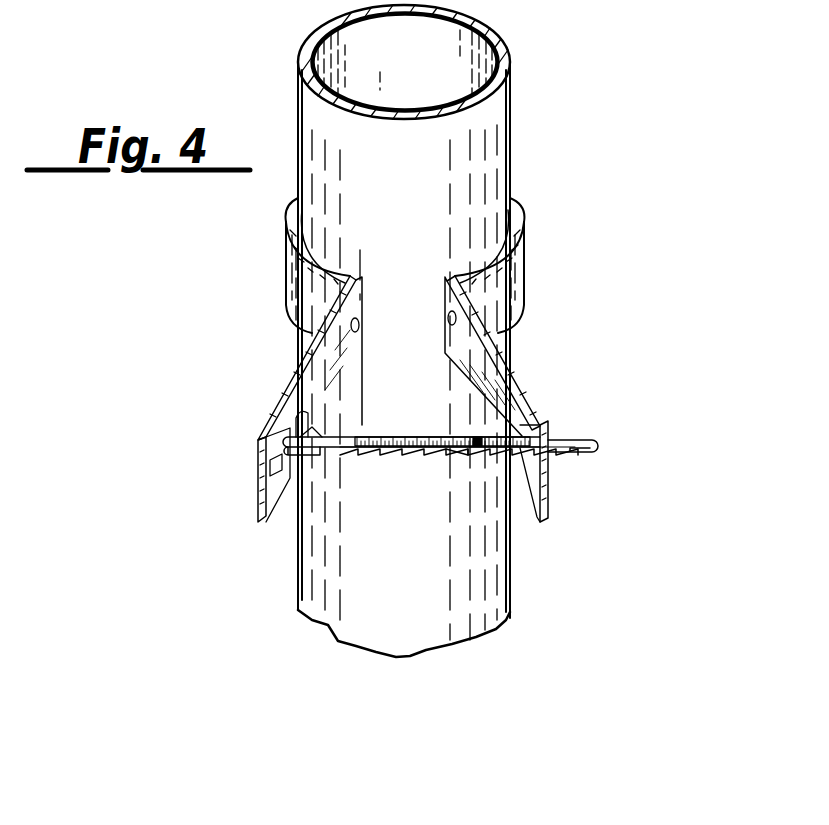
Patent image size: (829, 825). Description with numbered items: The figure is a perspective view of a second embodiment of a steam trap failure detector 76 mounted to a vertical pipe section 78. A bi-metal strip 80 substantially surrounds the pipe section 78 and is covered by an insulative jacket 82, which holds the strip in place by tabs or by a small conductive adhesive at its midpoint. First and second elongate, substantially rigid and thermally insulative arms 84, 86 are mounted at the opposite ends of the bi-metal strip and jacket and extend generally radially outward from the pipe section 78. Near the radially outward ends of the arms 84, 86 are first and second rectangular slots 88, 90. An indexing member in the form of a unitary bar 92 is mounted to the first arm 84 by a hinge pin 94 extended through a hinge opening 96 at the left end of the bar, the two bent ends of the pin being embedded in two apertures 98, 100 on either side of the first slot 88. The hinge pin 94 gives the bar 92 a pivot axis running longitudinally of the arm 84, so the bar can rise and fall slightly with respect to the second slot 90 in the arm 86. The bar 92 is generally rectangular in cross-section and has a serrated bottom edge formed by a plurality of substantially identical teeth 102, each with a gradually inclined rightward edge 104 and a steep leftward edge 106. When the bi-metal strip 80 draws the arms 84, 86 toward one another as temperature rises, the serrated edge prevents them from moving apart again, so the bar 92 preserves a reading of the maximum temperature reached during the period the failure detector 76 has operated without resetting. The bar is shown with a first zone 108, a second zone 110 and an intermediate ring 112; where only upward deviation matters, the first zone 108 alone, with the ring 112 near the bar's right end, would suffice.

The steam trap failure detector 76 is at (583, 331).
The vertical pipe section 78 is at (480, 128).
The bi-metal strip 80 is at (490, 248).
The insulative jacket 82 is at (500, 290).
The first arm 84 is at (322, 385).
The second arm 86 is at (518, 388).
The first rectangular slot 88 is at (282, 422).
The second rectangular slot 90 is at (527, 426).
The indexing bar 92 is at (300, 450).
The hinge pin 94 is at (305, 436).
The hinge opening 96 is at (285, 447).
The aperture 98 is at (300, 415).
The aperture 100 is at (268, 474).
The teeth 102 is at (440, 462).
The inclined rightward edge 104 is at (375, 458).
The steep leftward edge 106 is at (465, 458).
The first zone 108 is at (405, 436).
The second zone 110 is at (590, 456).
The intermediate ring 112 is at (478, 438).